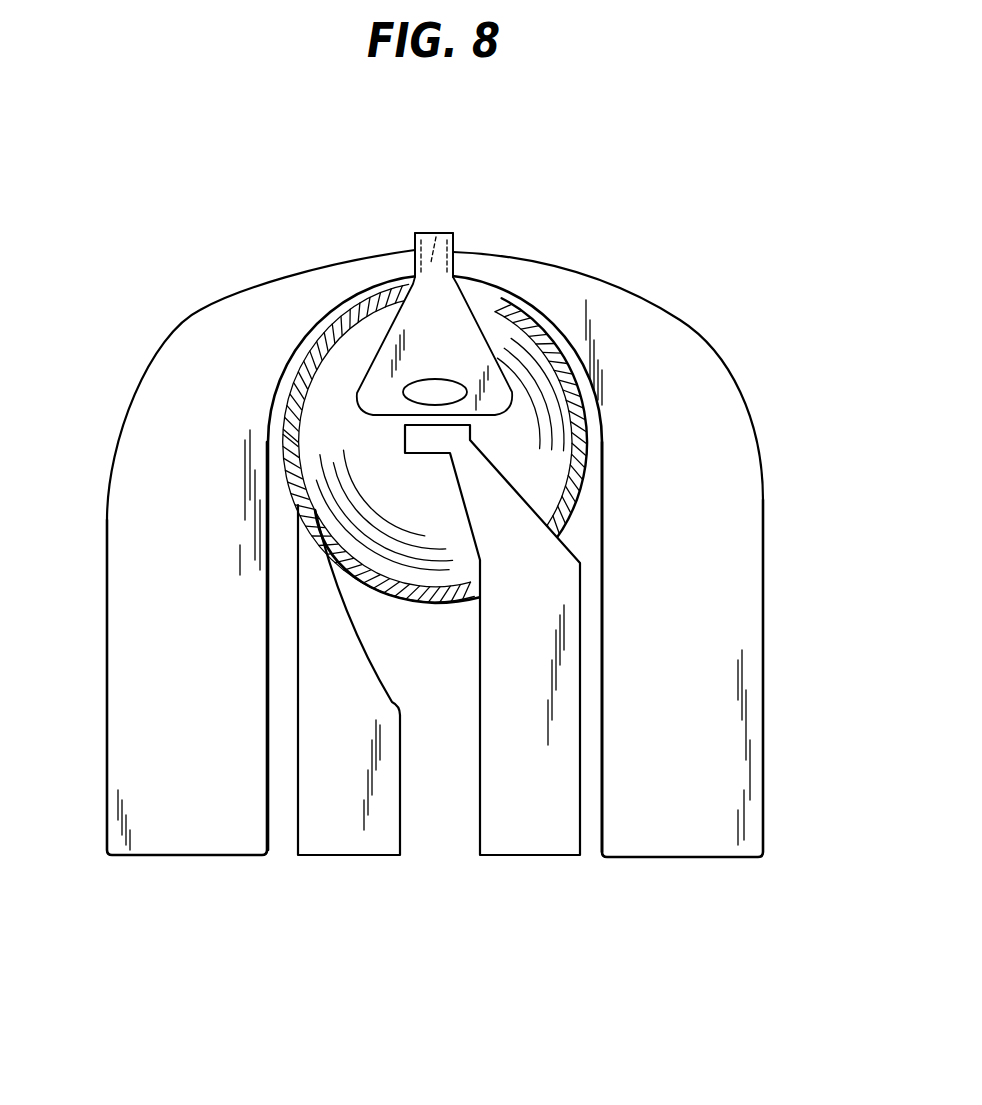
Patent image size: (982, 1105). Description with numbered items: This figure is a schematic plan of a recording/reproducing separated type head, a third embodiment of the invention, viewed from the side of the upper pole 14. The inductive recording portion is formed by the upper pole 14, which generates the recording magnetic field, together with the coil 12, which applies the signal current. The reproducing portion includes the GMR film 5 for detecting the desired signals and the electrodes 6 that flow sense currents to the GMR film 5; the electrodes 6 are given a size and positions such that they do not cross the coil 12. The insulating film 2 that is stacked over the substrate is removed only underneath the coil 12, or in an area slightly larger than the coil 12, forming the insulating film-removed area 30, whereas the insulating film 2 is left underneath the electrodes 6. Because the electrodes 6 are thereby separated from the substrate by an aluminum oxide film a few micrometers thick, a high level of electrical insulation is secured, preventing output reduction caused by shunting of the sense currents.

The insulating film 2 is at (190, 858).
The GMR film 5 is at (436, 236).
The electrodes 6 is at (140, 743).
The coil 12 is at (338, 403).
The upper pole 14 is at (458, 342).
The insulating film-removed area 30 is at (585, 455).